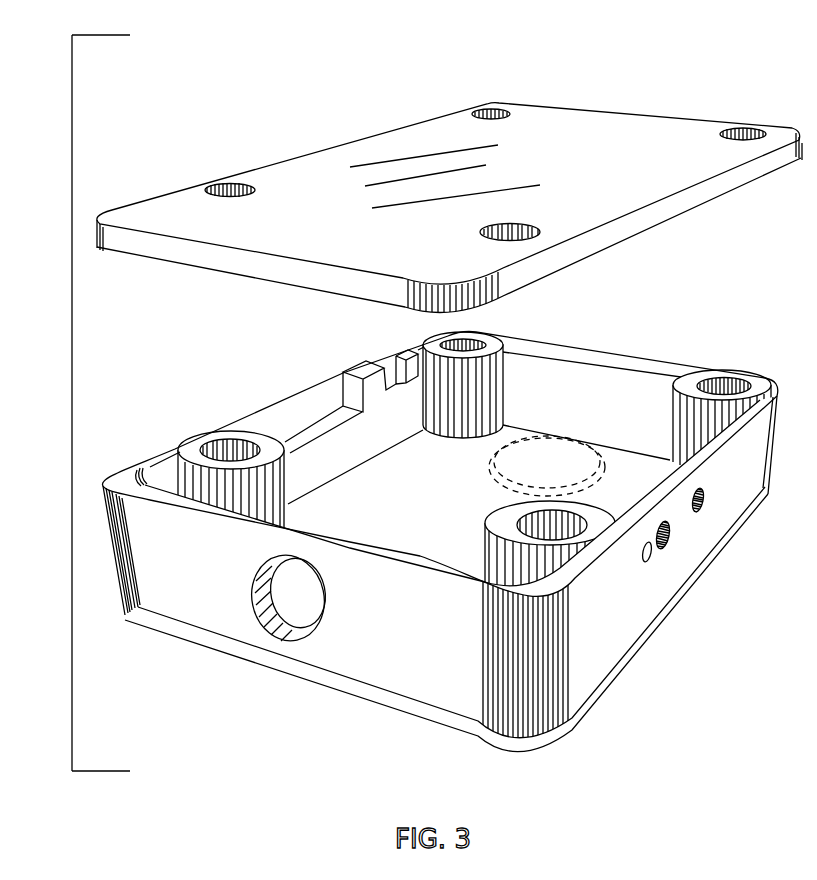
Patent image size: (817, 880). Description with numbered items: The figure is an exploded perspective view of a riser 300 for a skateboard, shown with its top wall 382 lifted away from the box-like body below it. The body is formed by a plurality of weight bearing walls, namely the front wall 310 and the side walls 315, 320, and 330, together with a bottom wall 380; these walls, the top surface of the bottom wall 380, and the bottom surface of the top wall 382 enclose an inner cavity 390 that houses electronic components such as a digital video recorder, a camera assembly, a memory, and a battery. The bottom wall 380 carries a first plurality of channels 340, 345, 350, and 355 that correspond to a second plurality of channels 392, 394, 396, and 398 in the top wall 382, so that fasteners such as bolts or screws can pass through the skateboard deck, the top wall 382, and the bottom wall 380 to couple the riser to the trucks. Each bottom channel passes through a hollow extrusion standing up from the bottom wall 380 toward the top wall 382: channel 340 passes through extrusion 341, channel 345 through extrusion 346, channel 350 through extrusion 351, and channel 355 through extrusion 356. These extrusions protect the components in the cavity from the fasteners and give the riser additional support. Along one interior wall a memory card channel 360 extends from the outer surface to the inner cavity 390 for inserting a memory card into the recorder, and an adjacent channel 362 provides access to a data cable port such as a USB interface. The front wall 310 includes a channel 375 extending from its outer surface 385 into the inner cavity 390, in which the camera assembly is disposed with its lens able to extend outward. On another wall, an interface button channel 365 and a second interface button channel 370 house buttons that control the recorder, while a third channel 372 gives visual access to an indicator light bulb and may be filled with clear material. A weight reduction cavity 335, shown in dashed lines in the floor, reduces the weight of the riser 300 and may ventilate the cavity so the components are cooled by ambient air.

The riser 300 is at (48, 338).
The front wall 310 is at (428, 573).
The side wall 315 is at (693, 454).
The side wall 320 is at (155, 457).
The side wall 330 is at (664, 362).
The weight reduction cavity 335 is at (487, 466).
The channel 340 is at (502, 520).
The extrusion 341 is at (497, 536).
The channel 345 is at (208, 443).
The extrusion 346 is at (268, 458).
The channel 350 is at (466, 343).
The extrusion 351 is at (488, 400).
The channel 355 is at (735, 384).
The extrusion 356 is at (690, 420).
The memory card channel 360 is at (312, 425).
The channel 362 is at (400, 365).
The interface button channel 365 is at (667, 548).
The second interface button channel 370 is at (699, 512).
The third channel 372 is at (648, 560).
The channel 375 is at (277, 632).
The bottom wall 380 is at (385, 484).
The top wall 382 is at (260, 268).
The outer surface 385 is at (440, 673).
The inner cavity 390 is at (578, 386).
The channel 392 is at (221, 186).
The channel 394 is at (477, 112).
The channel 396 is at (743, 131).
The channel 398 is at (540, 232).